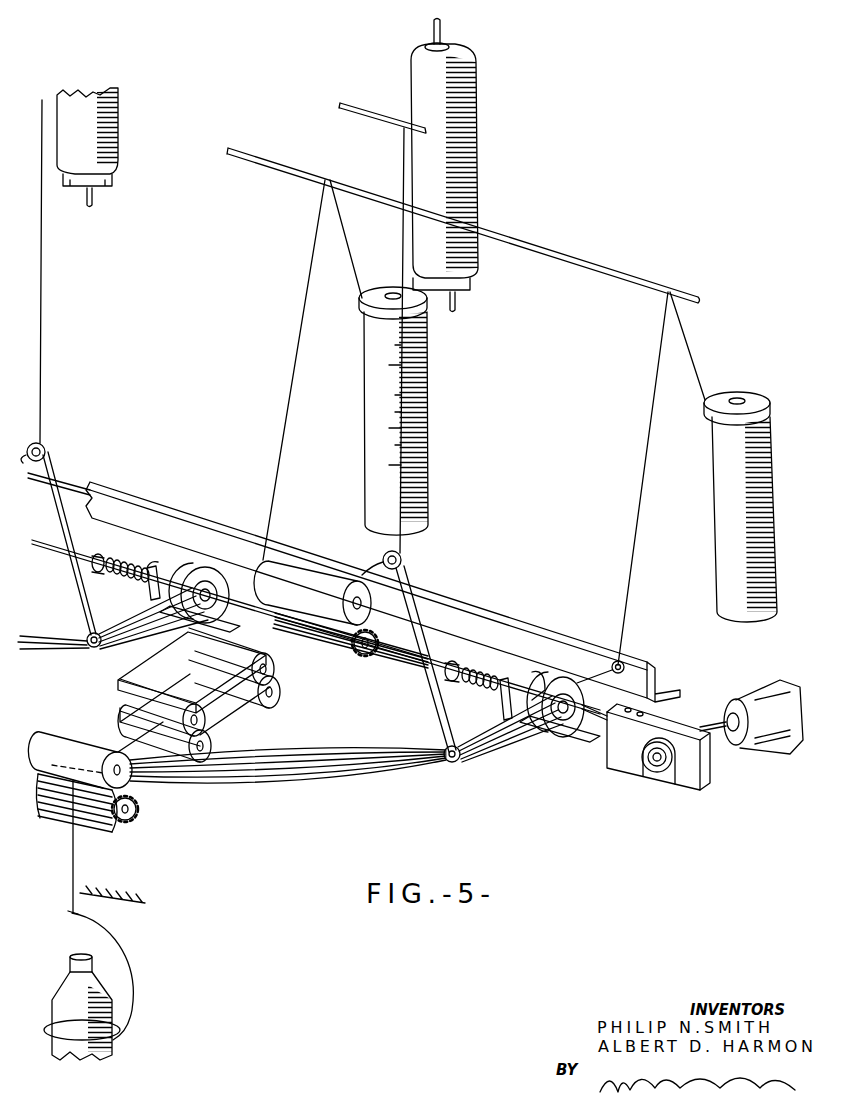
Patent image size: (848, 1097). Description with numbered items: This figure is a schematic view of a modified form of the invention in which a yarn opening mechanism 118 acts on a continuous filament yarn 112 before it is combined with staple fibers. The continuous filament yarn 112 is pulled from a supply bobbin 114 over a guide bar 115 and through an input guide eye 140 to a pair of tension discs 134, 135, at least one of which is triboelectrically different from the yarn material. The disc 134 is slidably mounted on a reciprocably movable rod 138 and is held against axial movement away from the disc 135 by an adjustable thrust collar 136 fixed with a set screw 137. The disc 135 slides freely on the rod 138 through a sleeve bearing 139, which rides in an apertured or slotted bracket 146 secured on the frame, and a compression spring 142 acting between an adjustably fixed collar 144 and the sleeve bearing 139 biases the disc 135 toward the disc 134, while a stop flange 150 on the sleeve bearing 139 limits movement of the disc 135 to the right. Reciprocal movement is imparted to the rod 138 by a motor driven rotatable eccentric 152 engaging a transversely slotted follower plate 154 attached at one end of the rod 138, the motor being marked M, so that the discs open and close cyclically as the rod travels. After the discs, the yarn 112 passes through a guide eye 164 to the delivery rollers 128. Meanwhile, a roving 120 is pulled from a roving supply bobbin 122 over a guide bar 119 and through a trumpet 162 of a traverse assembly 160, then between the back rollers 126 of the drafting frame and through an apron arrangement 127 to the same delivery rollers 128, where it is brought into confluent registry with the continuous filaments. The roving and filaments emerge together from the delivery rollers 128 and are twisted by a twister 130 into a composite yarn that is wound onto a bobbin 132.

The continuous filament yarn 112 is at (640, 515).
The supply bobbin 114 is at (429, 430).
The guide bar 115 is at (555, 247).
The yarn opening mechanism 118 is at (124, 555).
The guide bar 119 is at (362, 104).
The roving 120 is at (406, 533).
The roving supply bobbin 122 is at (479, 103).
The back rollers 126 is at (368, 624).
The apron arrangement 127 is at (220, 672).
The delivery rollers 128 is at (134, 797).
The twister 130 is at (122, 1054).
The bobbin 132 is at (67, 1060).
The tension disc 134 is at (216, 614).
The tension disc 135 is at (202, 560).
The thrust collar 136 is at (566, 740).
The set screw 137 is at (114, 942).
The rod 138 is at (594, 727).
The sleeve bearing 139 is at (538, 672).
The input guide eye 140 is at (625, 661).
The compression spring 142 is at (476, 690).
The collar 144 is at (452, 661).
The bracket 146 is at (533, 739).
The stop flange 150 is at (522, 688).
The eccentric 152 is at (664, 772).
The follower plate 154 is at (633, 776).
The traverse assembly 160 is at (424, 677).
The trumpet 162 is at (403, 560).
The guide eye 164 is at (445, 747).
The motor M is at (748, 692).